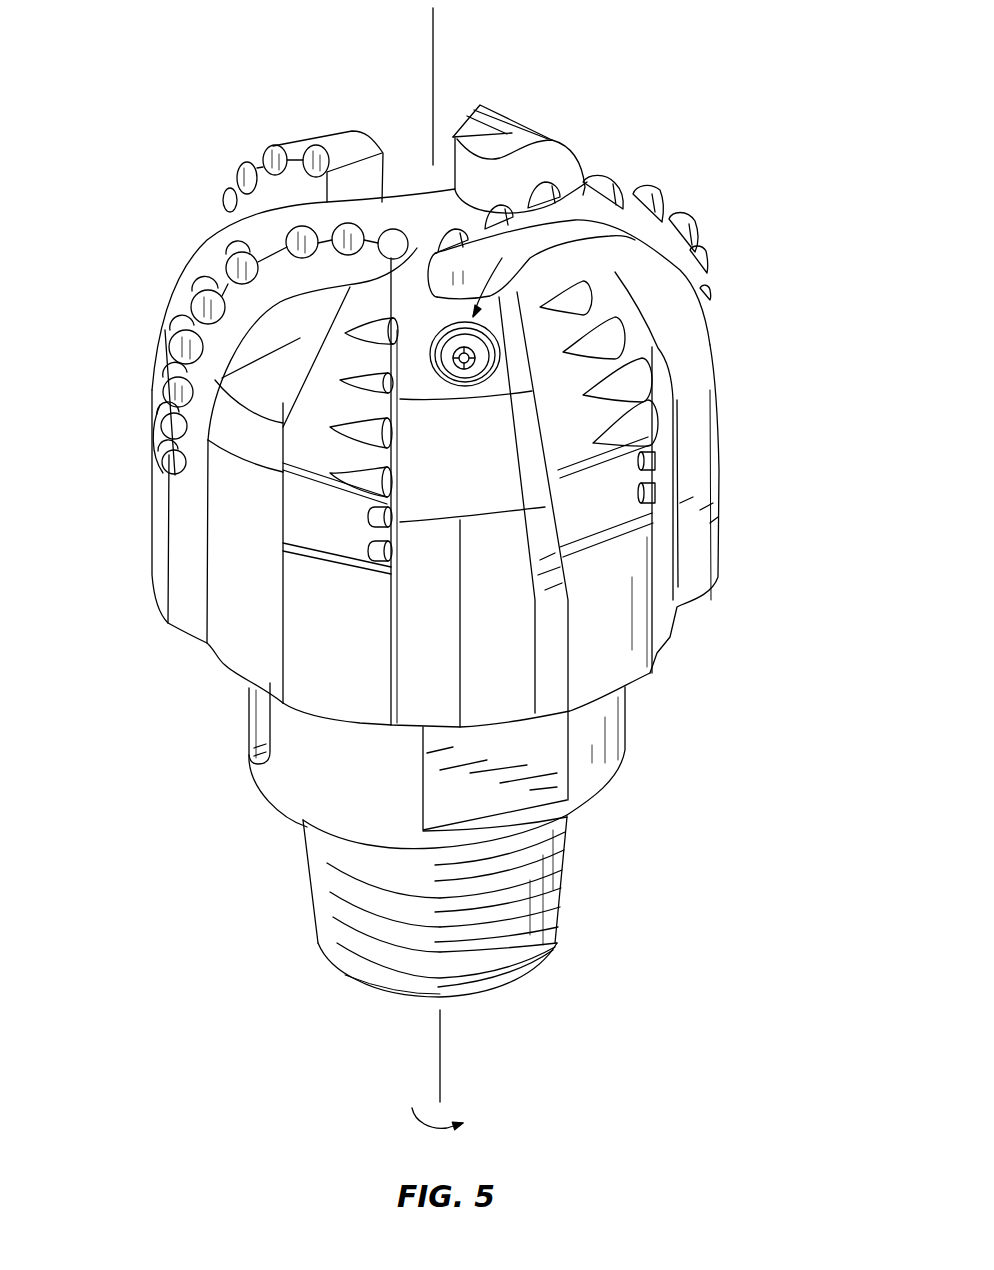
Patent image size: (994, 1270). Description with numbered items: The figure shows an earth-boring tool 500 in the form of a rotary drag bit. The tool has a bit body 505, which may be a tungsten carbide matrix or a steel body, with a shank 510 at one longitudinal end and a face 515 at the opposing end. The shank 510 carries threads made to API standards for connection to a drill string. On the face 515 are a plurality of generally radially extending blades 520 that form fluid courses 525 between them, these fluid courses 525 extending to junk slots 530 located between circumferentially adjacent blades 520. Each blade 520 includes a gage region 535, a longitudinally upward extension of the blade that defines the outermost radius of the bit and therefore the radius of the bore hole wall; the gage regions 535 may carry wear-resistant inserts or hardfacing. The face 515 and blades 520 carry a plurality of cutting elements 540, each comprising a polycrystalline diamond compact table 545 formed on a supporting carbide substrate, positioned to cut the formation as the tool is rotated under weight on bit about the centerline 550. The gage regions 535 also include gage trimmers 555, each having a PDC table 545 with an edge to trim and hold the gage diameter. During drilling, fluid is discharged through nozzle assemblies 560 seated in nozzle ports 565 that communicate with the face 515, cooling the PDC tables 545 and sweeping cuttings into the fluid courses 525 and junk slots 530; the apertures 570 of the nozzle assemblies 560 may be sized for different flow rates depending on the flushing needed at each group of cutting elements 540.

The earth-boring tool 500 is at (690, 127).
The bit body 505 is at (490, 653).
The shank 510 is at (530, 910).
The face 515 is at (275, 301).
The blades 520 is at (267, 222).
The fluid courses 525 is at (440, 432).
The junk slots 530 is at (414, 692).
The gage region 535 is at (158, 580).
The cutting elements 540 is at (232, 208).
The PDC table 545 is at (237, 272).
The centerline 550 is at (440, 1047).
The gage trimmers 555 is at (385, 517).
The nozzle assemblies 560 is at (470, 357).
The nozzle ports 565 is at (578, 228).
The apertures 570 is at (487, 363).